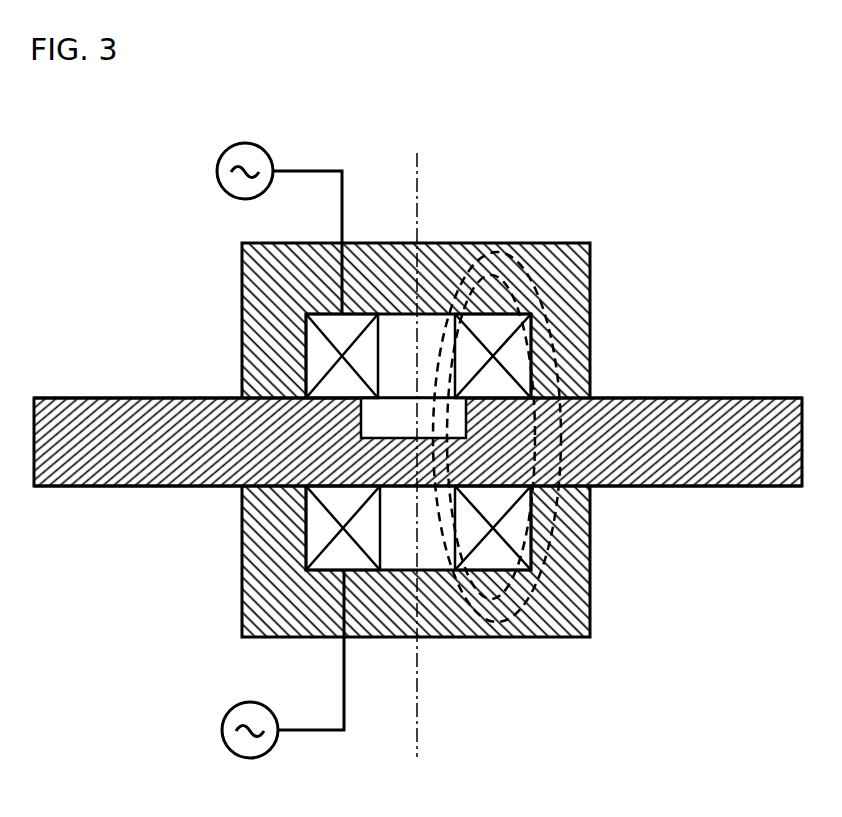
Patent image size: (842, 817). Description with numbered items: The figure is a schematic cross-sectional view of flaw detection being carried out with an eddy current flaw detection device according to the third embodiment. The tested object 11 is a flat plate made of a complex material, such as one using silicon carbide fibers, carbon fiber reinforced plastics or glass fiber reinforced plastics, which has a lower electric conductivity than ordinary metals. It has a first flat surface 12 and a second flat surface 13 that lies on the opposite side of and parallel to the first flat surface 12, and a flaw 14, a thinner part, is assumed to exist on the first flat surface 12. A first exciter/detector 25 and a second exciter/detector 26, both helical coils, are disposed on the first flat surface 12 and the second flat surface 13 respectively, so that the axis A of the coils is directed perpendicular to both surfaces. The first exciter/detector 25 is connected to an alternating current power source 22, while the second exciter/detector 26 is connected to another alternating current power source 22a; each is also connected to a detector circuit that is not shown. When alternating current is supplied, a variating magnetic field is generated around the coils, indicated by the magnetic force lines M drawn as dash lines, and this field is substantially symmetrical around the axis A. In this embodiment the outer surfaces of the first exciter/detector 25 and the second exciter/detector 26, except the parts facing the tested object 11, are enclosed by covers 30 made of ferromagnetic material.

The tested object 11 is at (66, 381).
The first flat surface 12 is at (210, 397).
The second flat surface 13 is at (205, 487).
The flaw 14 is at (401, 418).
The alternating current power source 22 is at (240, 146).
The alternating current power source 22a is at (226, 714).
The first exciter/detector 25 is at (312, 365).
The second exciter/detector 26 is at (315, 538).
The cover 30 is at (586, 283).
The magnetic force lines M is at (445, 620).
The axis A is at (417, 722).